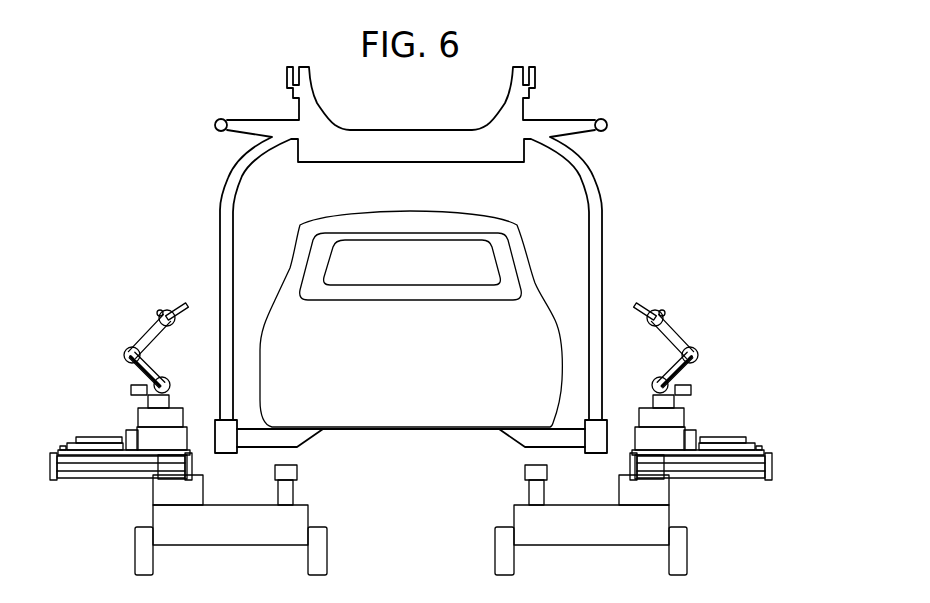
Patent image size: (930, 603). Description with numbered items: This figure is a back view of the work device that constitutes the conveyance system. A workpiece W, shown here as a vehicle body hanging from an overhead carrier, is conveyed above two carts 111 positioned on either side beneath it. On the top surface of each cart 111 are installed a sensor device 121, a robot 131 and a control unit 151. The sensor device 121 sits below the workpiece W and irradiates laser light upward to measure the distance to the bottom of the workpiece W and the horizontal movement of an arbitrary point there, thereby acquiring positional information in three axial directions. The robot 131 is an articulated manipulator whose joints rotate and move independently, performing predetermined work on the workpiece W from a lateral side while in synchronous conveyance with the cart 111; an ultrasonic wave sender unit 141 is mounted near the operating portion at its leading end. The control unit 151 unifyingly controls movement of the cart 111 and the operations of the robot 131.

The workpiece W is at (537, 308).
The cart 111 is at (160, 515).
The sensor device 121 is at (525, 469).
The robot 131 is at (141, 338).
The ultrasonic wave sender unit 141 is at (159, 311).
The control unit 151 is at (130, 437).